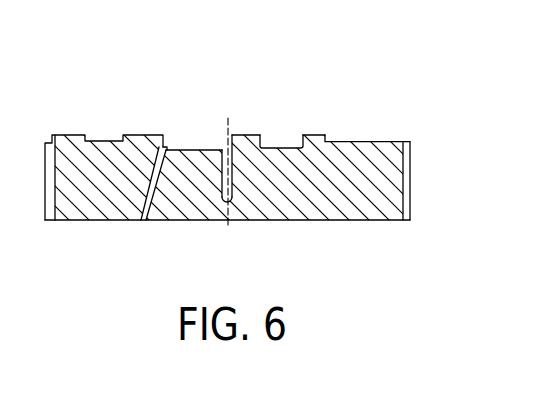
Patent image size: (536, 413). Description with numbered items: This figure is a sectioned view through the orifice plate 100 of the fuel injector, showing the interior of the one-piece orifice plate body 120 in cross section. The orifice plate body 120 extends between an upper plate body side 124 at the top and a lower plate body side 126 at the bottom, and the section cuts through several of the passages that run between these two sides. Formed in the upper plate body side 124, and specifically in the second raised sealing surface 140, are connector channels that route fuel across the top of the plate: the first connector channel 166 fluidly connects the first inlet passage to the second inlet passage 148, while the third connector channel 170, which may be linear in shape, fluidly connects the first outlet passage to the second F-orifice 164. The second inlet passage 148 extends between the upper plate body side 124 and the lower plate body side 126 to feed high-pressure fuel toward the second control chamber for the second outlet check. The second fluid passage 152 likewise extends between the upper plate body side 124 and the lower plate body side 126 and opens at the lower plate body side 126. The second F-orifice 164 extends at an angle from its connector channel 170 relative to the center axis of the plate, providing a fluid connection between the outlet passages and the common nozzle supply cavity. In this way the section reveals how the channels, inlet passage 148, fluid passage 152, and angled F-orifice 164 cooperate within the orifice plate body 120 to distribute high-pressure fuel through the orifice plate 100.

The orifice plate 100 is at (424, 144).
The one-piece orifice plate body 120 is at (411, 229).
The upper plate body side 124 is at (334, 128).
The lower plate body side 126 is at (301, 230).
The second raised sealing surface 140 is at (248, 135).
The second inlet passage 148 is at (221, 210).
The second fluid passage 152 is at (147, 209).
The second F-orifice 164 is at (150, 147).
The first connector channel 166 is at (290, 142).
The third connector channel 170 is at (182, 140).